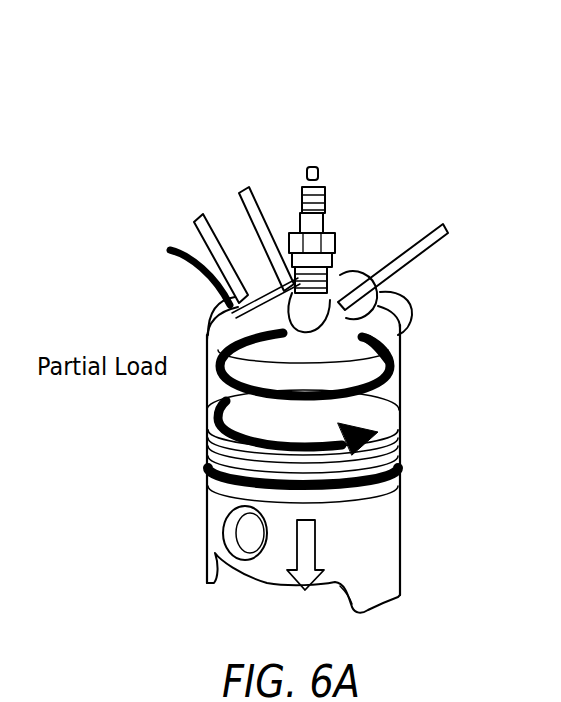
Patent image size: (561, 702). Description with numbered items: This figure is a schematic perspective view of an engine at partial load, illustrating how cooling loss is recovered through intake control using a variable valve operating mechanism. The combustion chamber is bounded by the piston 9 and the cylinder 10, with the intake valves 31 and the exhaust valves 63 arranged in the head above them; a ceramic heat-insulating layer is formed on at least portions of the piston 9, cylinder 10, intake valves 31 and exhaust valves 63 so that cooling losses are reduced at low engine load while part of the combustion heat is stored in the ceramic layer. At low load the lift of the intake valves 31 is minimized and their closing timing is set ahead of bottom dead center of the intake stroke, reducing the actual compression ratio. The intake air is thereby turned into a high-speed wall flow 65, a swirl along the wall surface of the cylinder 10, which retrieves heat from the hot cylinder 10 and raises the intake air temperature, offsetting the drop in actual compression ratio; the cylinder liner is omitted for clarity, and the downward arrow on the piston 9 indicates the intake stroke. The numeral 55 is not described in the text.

The piston 9 is at (380, 547).
The cylinder 10 is at (405, 386).
The intake valves 31 is at (205, 220).
The swirl flow 55 is at (405, 432).
The exhaust valves 63 is at (389, 265).
The high-speed wall flow 65 is at (207, 442).